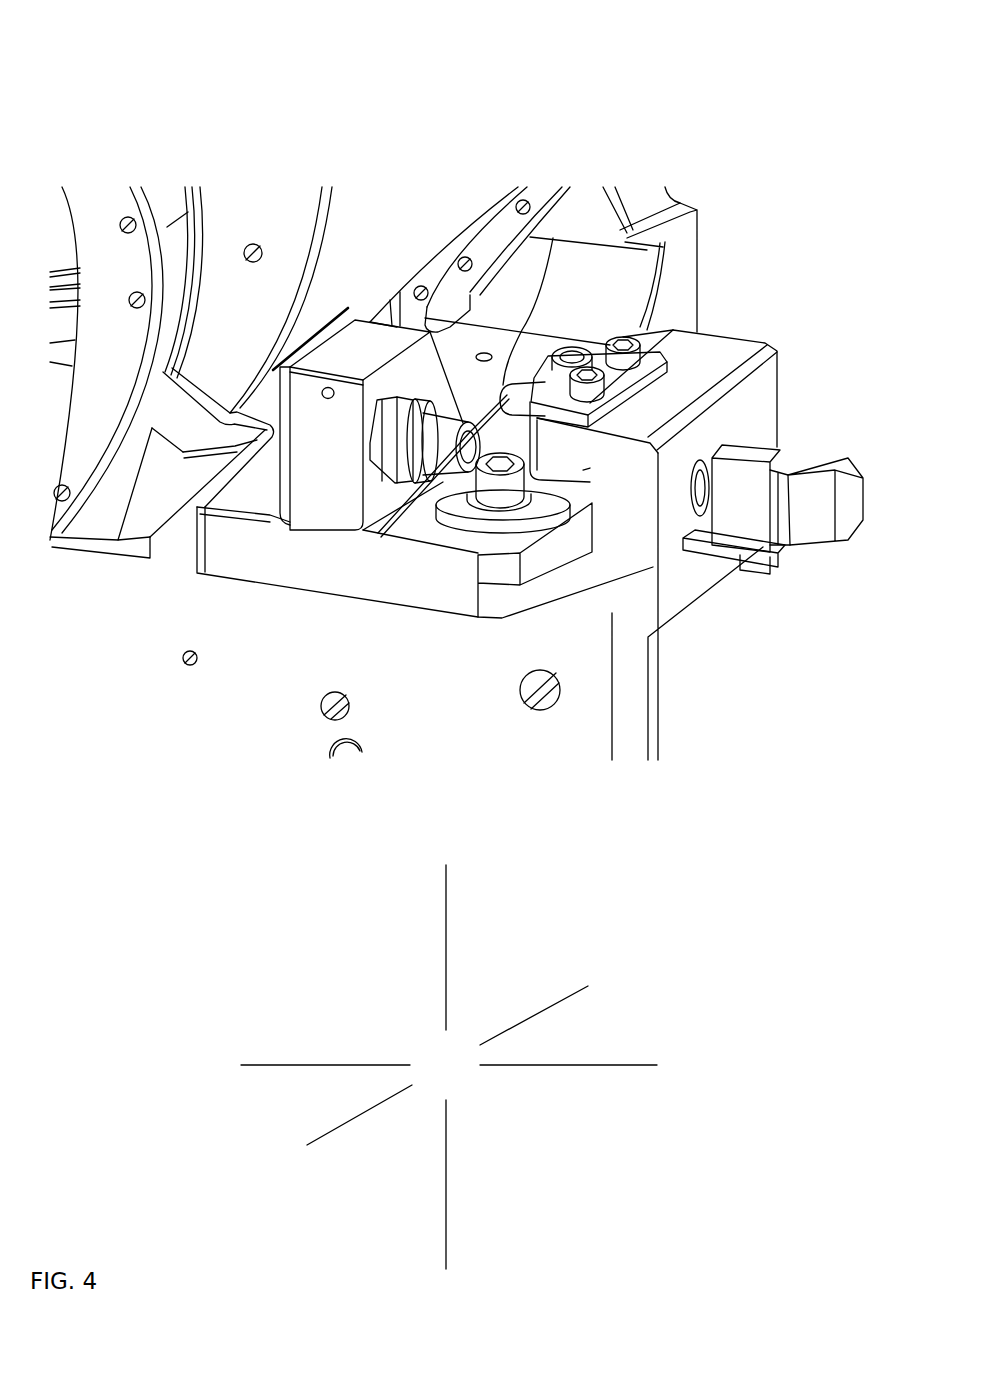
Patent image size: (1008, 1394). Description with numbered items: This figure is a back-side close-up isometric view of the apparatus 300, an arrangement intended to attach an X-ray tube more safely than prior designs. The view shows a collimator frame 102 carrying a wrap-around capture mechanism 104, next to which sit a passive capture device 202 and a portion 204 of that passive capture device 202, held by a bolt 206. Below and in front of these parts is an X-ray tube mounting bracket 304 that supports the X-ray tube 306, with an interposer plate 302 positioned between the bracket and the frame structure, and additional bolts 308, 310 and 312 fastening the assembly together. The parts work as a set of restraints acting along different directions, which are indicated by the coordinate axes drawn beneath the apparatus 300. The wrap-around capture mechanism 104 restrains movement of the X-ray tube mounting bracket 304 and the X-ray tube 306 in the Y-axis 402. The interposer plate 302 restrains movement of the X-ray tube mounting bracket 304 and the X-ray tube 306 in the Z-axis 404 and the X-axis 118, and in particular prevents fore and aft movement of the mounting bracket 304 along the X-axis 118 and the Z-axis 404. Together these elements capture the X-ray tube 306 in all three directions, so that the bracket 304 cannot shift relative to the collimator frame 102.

The collimator frame 102 is at (630, 694).
The wrap-around capture mechanism 104 is at (753, 413).
The X-axis 118 is at (555, 1003).
The passive capture device 202 is at (660, 364).
The portion of the passive capture device 204 is at (572, 482).
The bolt 206 is at (622, 345).
The apparatus 300 is at (737, 1226).
The interposer plate 302 is at (718, 553).
The X-ray tube mounting bracket 304 is at (327, 567).
The X-ray tube 306 is at (117, 508).
The bolt 308 is at (498, 488).
The bolt 310 is at (578, 350).
The bolt 312 is at (442, 450).
The Y-axis 402 is at (446, 958).
The Z-axis 404 is at (320, 1065).